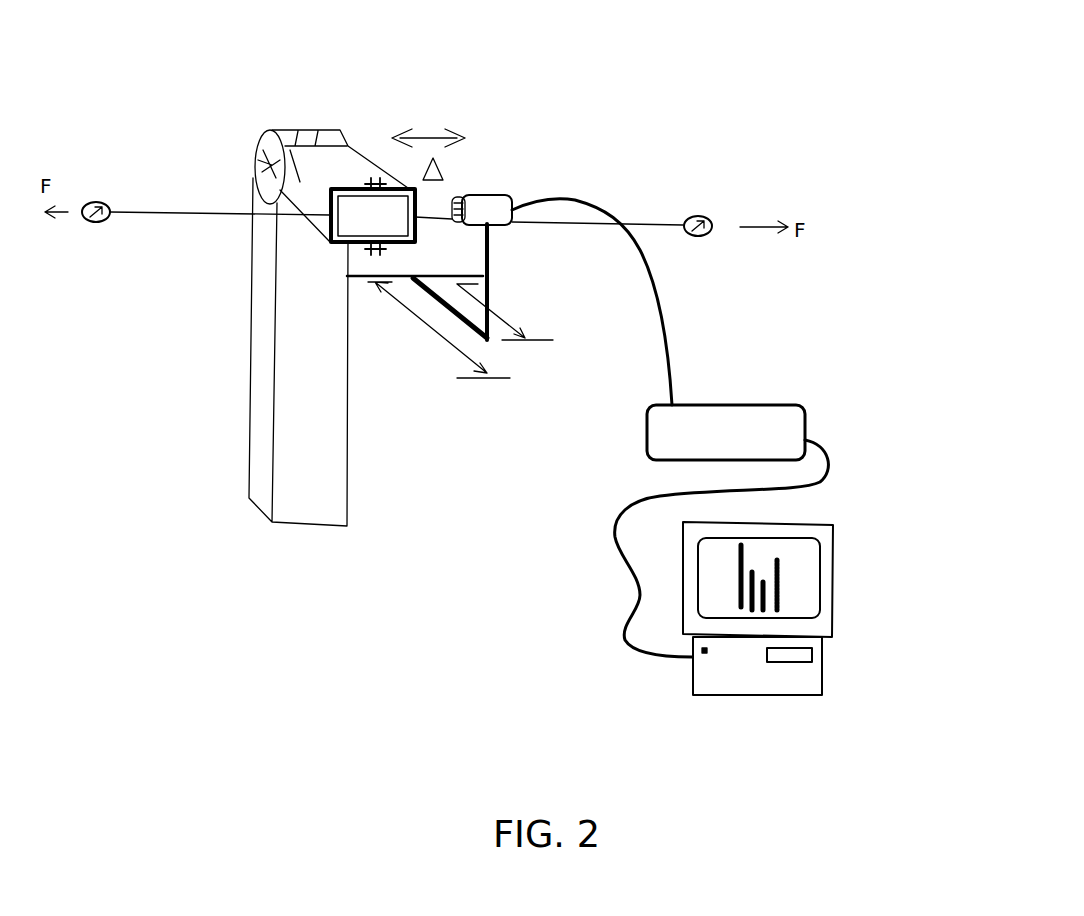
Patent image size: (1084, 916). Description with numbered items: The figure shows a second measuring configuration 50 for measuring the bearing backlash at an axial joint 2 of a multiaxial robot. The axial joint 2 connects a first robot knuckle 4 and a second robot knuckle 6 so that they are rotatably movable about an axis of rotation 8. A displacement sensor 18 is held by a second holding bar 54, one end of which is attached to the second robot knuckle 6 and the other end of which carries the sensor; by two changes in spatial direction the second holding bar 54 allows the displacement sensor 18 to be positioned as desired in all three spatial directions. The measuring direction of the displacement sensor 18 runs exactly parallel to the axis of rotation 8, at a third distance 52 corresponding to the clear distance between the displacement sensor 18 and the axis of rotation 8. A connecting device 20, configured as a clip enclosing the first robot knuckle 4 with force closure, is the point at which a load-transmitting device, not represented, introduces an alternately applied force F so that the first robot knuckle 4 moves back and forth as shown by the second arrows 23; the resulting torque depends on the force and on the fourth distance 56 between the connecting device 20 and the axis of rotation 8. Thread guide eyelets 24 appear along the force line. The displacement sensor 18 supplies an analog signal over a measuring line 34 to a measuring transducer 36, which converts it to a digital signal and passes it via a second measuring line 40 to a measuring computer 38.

The axial joint 2 is at (337, 128).
The first robot knuckle 4 is at (302, 187).
The second robot knuckle 6 is at (315, 442).
The axis of rotation 8 is at (263, 164).
The displacement sensor 18 is at (498, 203).
The connecting device 20 is at (418, 237).
The second arrows 23 is at (426, 128).
The thread guide eyelets 24 is at (100, 198).
The measuring line 34 is at (673, 308).
The measuring transducer 36 is at (755, 423).
The measuring computer 38 is at (808, 673).
The second measuring line 40 is at (830, 478).
The second measuring configuration 50 is at (222, 608).
The third distance 52 is at (492, 308).
The second holding bar 54 is at (493, 263).
The fourth distance 56 is at (442, 343).